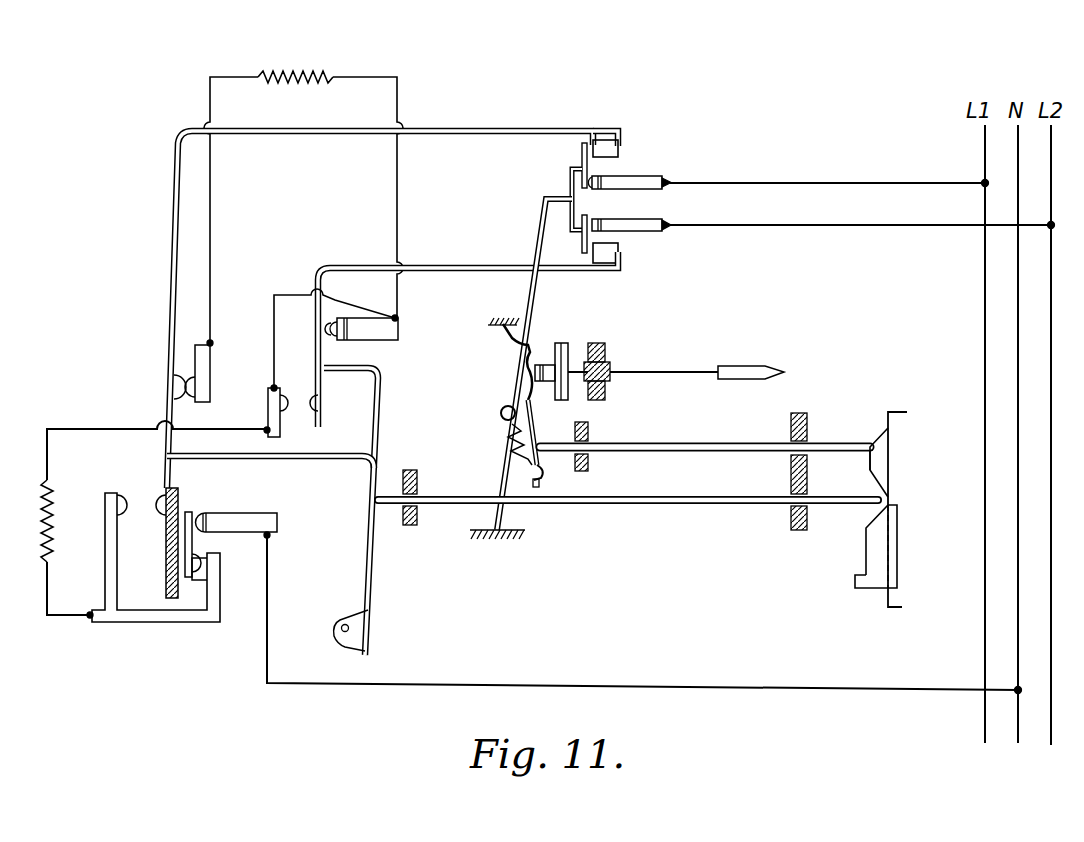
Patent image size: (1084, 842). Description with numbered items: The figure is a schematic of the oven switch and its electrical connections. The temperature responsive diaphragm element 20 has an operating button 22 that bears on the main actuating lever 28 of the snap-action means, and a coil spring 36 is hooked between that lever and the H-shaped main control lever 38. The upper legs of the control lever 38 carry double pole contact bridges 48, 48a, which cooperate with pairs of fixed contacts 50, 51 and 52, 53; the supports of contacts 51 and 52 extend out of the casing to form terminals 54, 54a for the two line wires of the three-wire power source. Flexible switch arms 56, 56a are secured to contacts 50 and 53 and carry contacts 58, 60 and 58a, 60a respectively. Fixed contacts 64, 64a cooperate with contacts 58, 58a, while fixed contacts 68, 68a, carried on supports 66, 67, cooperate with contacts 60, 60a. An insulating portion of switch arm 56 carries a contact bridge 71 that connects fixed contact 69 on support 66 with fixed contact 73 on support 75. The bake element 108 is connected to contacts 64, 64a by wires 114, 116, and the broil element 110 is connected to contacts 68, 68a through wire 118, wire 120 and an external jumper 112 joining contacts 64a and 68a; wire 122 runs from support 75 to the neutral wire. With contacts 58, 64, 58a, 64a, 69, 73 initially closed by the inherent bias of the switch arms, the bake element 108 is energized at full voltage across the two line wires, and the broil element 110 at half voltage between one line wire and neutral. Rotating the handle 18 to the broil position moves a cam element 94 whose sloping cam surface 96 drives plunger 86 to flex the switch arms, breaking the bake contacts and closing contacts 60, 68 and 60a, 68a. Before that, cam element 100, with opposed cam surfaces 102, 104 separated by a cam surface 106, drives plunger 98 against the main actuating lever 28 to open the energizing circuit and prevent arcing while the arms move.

The handle 18 is at (886, 600).
The diaphragm element 20 is at (565, 343).
The operating button 22 is at (545, 365).
The main actuating lever 28 is at (536, 424).
The coil spring 36 is at (505, 432).
The main control lever 38 is at (506, 470).
The double pole contact bridge 48 is at (581, 155).
The double pole contact bridge 48a is at (605, 263).
The fixed contact 50 is at (600, 137).
The fixed contact 51 is at (600, 178).
The fixed contact 52 is at (590, 220).
The fixed contact 53 is at (600, 235).
The terminal connection 54 is at (660, 182).
The terminal connection 54a is at (668, 222).
The flexible switch arm 56 is at (177, 183).
The flexible switch arm 56a is at (322, 262).
The contact 58 is at (172, 382).
The contact 58a is at (333, 322).
The contact 60 is at (158, 497).
The contact 60a is at (322, 403).
The fixed contact 64 is at (205, 372).
The fixed contact 64a is at (345, 340).
The contact support 66 is at (178, 622).
The contact support 67 is at (267, 408).
The fixed contact 68 is at (122, 497).
The fixed contact 68a is at (286, 412).
The fixed contact 69 is at (205, 560).
The contact bridge 71 is at (200, 580).
The fixed contact 73 is at (190, 512).
The contact support 75 is at (277, 522).
The plunger 86 is at (648, 506).
The cam element 94 is at (866, 553).
The sloping cam surface 96 is at (866, 528).
The plunger 98 is at (692, 443).
The cam element 100 is at (890, 462).
The cam surface 102 is at (878, 440).
The cam surface 104 is at (872, 478).
The cam surface 106 is at (870, 465).
The bake element 108 is at (322, 74).
The broil element 110 is at (42, 485).
The external jumper 112 is at (296, 294).
The wire 114 is at (208, 97).
The wire 116 is at (400, 95).
The wire 118 is at (112, 428).
The wire 120 is at (72, 622).
The wire 122 is at (475, 682).